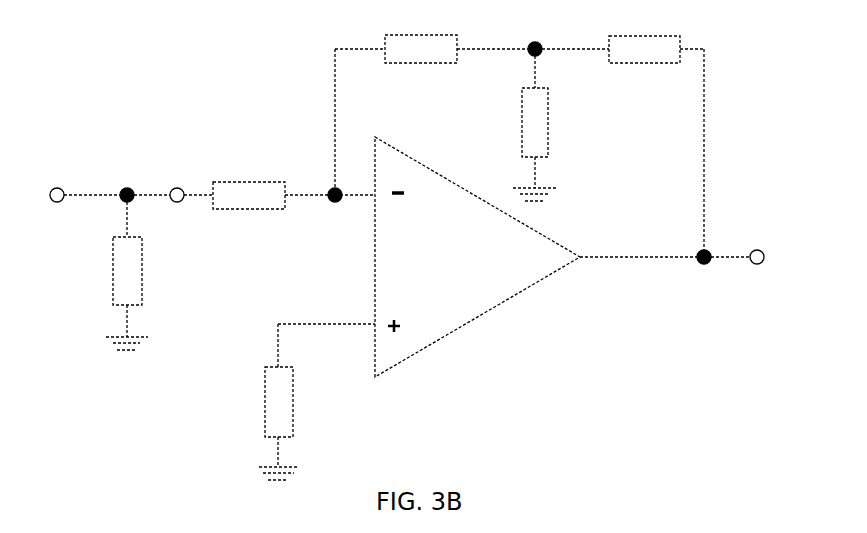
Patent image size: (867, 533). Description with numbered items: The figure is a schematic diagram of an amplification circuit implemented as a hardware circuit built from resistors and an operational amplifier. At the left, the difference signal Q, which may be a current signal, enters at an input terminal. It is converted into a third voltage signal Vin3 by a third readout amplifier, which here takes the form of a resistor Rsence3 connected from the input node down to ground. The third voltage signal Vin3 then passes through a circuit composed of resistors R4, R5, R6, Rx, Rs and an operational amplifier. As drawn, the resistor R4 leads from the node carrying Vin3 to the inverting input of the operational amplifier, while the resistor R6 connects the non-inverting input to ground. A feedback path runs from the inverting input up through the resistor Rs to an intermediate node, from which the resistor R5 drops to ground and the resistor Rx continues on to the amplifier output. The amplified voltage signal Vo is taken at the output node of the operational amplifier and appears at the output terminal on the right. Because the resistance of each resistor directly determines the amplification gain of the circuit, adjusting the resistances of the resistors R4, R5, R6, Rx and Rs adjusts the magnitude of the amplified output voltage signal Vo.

The difference signal Q is at (67, 175).
The third voltage signal Vin3 is at (177, 175).
The resistor R4 is at (251, 175).
The resistor Rsence3 is at (174, 271).
The resistor Rs is at (421, 31).
The resistor Rx is at (644, 31).
The resistor R5 is at (562, 122).
The amplified voltage signal Vo is at (756, 234).
The resistor R6 is at (254, 402).